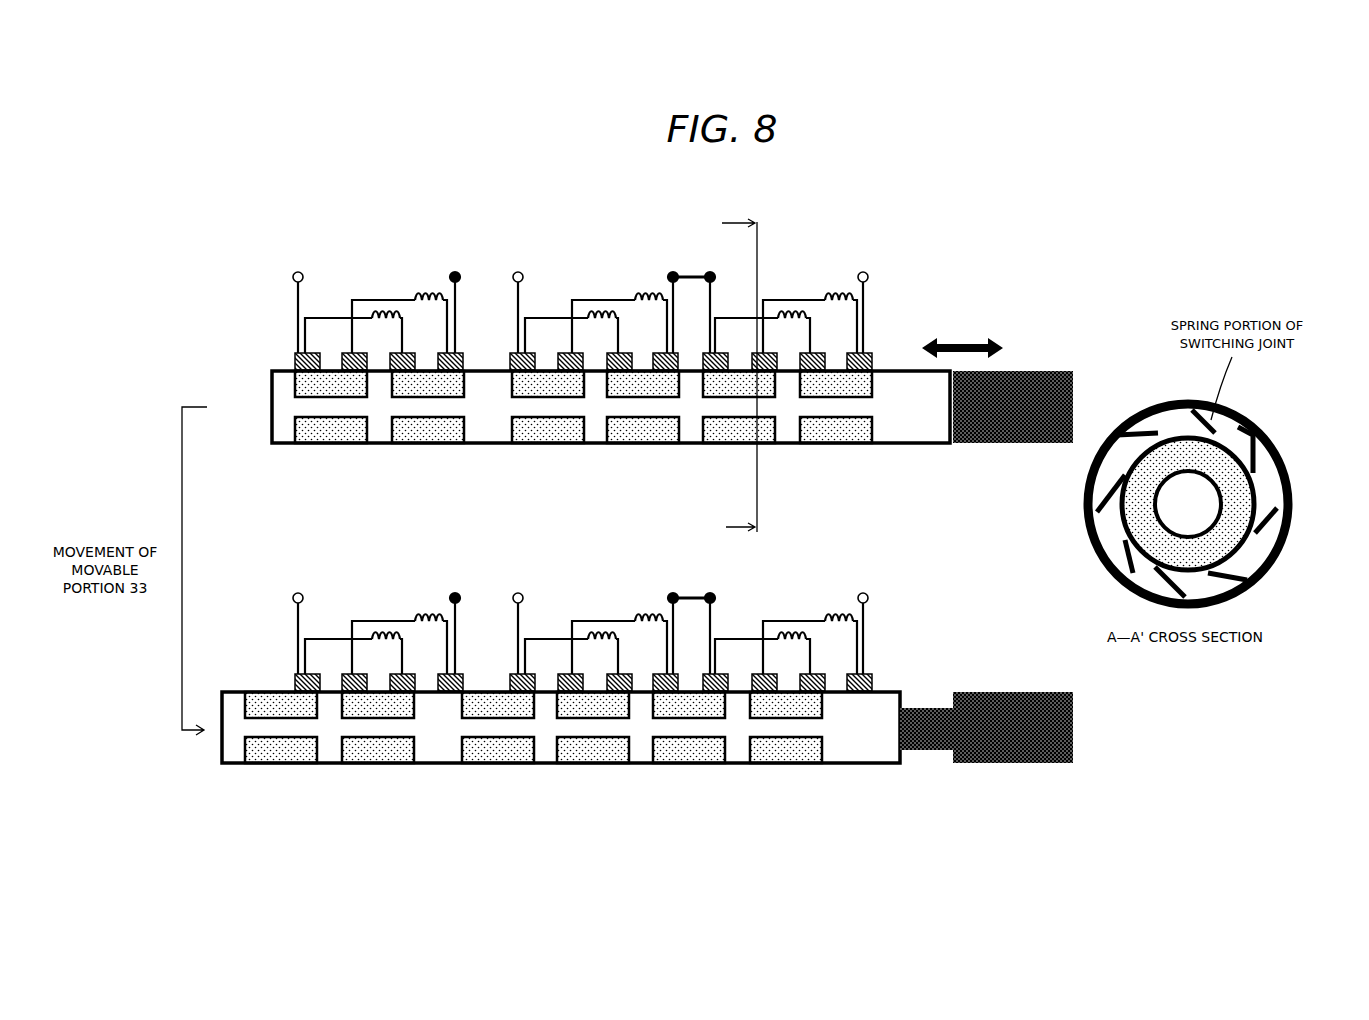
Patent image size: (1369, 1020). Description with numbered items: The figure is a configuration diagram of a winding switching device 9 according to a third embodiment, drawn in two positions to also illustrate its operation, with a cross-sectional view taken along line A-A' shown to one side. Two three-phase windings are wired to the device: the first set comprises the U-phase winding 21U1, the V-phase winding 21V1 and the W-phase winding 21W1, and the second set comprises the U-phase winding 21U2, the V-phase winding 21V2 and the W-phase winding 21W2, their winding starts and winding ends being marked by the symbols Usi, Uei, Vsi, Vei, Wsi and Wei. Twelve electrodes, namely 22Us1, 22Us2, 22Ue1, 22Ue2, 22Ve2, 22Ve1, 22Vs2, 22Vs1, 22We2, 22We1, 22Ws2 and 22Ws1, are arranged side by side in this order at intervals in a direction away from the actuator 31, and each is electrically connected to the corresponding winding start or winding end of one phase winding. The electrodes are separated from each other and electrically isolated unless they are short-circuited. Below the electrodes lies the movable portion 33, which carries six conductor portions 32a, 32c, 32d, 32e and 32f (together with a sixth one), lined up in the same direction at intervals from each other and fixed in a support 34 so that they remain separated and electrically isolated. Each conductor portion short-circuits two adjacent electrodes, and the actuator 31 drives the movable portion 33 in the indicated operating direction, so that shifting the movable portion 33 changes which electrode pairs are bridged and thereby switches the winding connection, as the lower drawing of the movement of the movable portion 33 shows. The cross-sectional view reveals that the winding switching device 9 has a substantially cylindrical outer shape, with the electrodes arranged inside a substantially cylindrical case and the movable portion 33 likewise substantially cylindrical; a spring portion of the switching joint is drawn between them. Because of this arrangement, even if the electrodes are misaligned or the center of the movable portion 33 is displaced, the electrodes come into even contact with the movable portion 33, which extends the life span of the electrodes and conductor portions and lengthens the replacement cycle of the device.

The winding switching device 9 is at (391, 214).
The W-phase winding 21W1 is at (386, 315).
The W-phase winding 21W2 is at (428, 297).
The V-phase winding 21V1 is at (602, 315).
The V-phase winding 21V2 is at (645, 297).
The U-phase winding 21U1 is at (838, 297).
The U-phase winding 21U2 is at (790, 315).
The electrode 22Ws1 is at (305, 400).
The electrode 22Ws2 is at (345, 420).
The electrode 22We1 is at (395, 402).
The electrode 22We2 is at (453, 402).
The electrode 22Vs1 is at (525, 402).
The electrode 22Vs2 is at (573, 420).
The electrode 22Ve1 is at (622, 402).
The electrode 22Ve2 is at (667, 402).
The electrode 22Ue1 is at (752, 402).
The electrode 22Ue2 is at (715, 402).
The electrode 22Us1 is at (857, 402).
The electrode 22Us2 is at (808, 400).
The actuator 31 is at (1036, 371).
The conductor portion 32a is at (873, 386).
The conductor portion 32c is at (612, 425).
The conductor portion 32d is at (548, 425).
The conductor portion 32e is at (418, 425).
The conductor portion 32f is at (325, 425).
The movable portion 33 is at (582, 429).
The support 34 is at (482, 436).